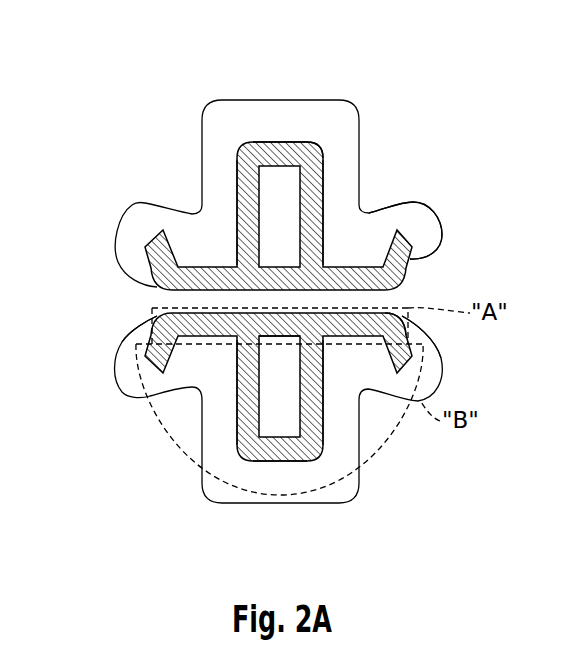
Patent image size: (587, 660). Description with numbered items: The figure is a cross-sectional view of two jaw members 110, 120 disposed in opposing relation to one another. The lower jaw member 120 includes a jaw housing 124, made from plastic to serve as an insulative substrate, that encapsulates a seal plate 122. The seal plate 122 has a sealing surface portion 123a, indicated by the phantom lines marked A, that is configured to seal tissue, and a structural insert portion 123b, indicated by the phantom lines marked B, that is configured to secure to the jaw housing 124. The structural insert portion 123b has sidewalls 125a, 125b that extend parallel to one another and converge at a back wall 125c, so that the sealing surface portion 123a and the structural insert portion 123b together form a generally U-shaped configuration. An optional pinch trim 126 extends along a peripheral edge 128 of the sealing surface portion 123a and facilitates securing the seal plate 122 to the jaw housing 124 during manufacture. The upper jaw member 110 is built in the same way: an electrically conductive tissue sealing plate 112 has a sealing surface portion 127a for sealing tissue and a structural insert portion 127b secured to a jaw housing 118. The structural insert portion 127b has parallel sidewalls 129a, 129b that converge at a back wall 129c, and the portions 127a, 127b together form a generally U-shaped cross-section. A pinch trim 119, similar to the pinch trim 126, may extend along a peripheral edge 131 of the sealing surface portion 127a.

The jaw member 110 is at (399, 57).
The jaw housing 118 is at (360, 142).
The pinch trim 119 is at (443, 242).
The peripheral edge 131 is at (410, 270).
The seal plate 122 is at (392, 300).
The peripheral edge 128 is at (408, 319).
The pinch trim 126 is at (444, 356).
The electrically conductive tissue sealing plate 112 is at (182, 289).
The sealing surface portion 123a is at (211, 303).
The structural insert portion 123b is at (146, 386).
The sidewall 125a is at (236, 417).
The sidewall 125b is at (323, 417).
The back wall 125c is at (283, 455).
The sealing surface portion 127a is at (300, 300).
The structural insert portion 127b is at (320, 138).
The sidewall 129a is at (237, 203).
The sidewall 129b is at (323, 200).
The back wall 129c is at (280, 141).
The jaw housing 124 is at (359, 469).
The jaw member 120 is at (402, 522).